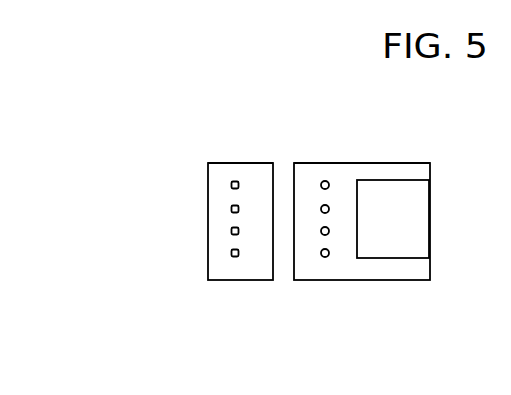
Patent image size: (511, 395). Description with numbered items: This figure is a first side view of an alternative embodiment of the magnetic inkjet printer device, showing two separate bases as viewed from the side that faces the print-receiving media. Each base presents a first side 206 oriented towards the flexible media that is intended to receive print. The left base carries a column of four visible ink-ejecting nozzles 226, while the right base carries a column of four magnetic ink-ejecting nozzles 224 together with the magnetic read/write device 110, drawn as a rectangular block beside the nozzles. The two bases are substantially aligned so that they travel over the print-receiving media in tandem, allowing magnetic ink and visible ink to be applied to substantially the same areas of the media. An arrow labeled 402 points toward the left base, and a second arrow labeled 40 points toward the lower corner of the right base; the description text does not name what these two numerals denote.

The connector assembly 40 is at (405, 283).
The magnetic read/write device 110 is at (412, 228).
The first side 206 is at (262, 170).
The magnetic ink-ejecting nozzle 224 is at (340, 257).
The visible ink-ejecting nozzle 226 is at (248, 254).
The mating component 402 is at (207, 227).